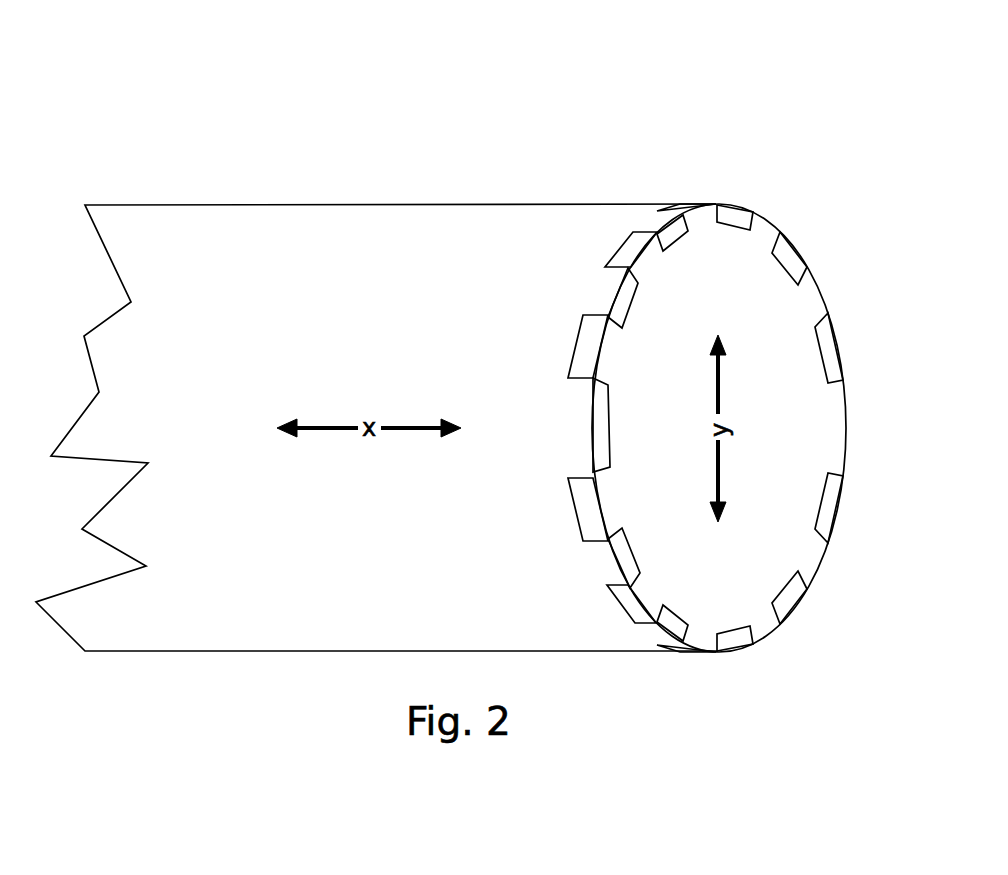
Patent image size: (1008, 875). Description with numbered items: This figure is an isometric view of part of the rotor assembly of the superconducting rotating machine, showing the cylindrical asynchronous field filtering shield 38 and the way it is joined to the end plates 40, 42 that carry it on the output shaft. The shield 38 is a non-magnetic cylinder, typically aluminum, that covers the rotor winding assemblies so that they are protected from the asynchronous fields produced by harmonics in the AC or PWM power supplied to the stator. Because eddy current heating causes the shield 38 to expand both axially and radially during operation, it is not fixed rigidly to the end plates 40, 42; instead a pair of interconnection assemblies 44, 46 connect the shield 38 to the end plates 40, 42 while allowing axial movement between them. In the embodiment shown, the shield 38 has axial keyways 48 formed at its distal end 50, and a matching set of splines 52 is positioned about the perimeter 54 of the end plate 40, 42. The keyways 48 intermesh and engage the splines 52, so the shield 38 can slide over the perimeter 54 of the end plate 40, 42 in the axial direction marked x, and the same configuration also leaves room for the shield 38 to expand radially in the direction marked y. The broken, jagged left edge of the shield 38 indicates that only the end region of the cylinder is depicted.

The asynchronous field filtering shield 38 is at (258, 205).
The end plate 40 is at (731, 469).
The end plate 42 is at (758, 524).
The interconnection assembly 44 is at (801, 361).
The interconnection assembly 46 is at (773, 215).
The axial keyways 48 is at (598, 300).
The distal end 50 is at (662, 670).
The splines 52 is at (630, 253).
The perimeter 54 is at (750, 203).